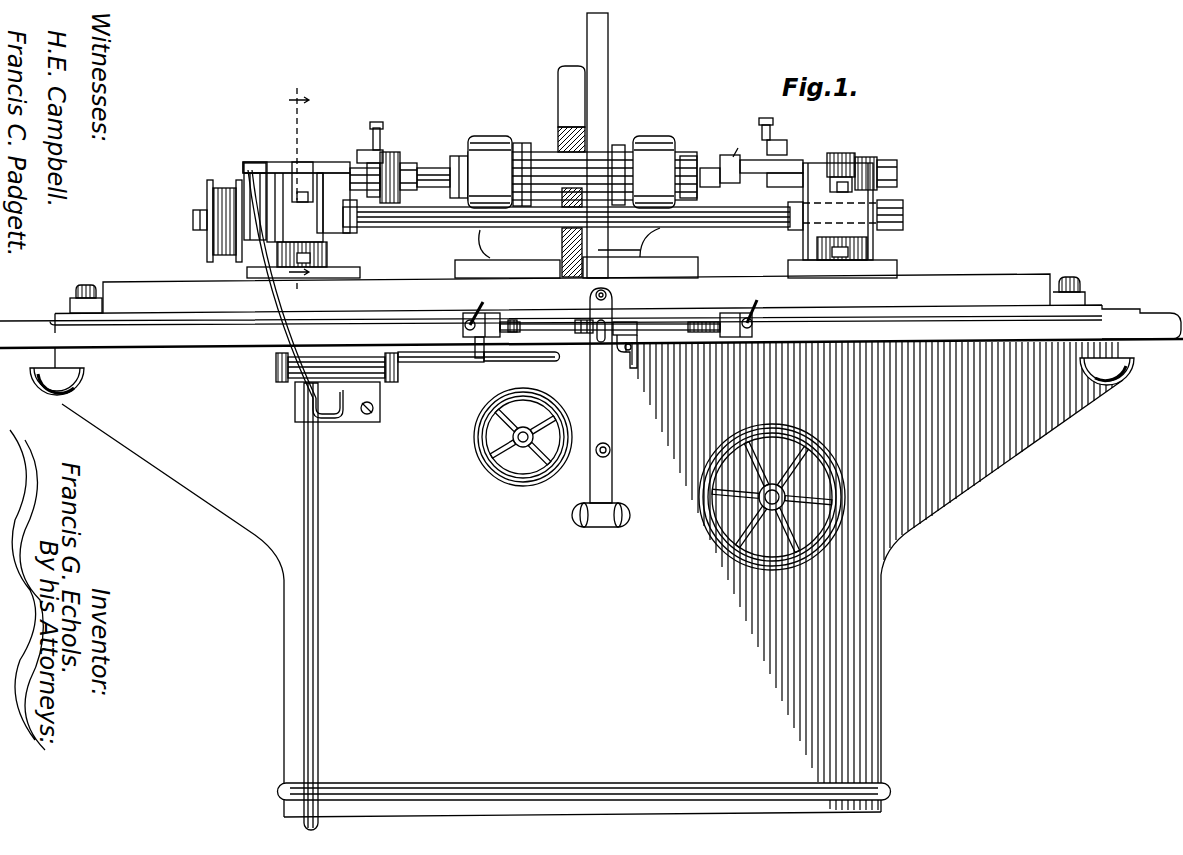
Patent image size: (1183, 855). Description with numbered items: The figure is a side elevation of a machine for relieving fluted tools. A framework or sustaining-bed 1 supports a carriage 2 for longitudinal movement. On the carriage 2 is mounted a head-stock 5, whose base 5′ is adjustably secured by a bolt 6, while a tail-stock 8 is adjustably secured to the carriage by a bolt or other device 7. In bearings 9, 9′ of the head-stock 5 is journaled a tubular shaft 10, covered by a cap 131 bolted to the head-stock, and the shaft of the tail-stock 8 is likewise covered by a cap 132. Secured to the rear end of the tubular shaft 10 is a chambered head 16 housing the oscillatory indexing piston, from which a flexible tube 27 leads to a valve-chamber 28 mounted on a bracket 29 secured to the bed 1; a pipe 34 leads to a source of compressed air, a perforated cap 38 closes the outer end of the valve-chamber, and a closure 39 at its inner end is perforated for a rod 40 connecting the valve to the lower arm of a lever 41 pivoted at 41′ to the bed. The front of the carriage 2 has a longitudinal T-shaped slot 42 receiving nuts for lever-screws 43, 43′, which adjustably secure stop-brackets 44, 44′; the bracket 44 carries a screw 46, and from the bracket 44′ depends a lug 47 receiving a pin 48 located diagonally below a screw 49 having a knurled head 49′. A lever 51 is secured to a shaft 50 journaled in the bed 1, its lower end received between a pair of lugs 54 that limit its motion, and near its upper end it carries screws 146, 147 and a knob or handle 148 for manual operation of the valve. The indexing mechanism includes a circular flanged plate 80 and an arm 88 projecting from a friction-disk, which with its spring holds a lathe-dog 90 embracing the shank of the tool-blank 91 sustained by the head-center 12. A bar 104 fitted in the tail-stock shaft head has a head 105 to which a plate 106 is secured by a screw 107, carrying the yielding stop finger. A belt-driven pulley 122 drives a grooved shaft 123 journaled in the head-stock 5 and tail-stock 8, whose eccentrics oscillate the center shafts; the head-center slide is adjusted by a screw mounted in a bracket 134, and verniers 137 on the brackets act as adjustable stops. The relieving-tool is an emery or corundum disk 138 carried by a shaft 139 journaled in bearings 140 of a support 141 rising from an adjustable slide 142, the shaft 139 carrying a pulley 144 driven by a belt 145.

The framework or sustaining-bed 1 is at (582, 579).
The carriage 2 is at (752, 312).
The head-stock 5 is at (290, 190).
The base 5′ is at (350, 270).
The bolt 6 is at (310, 260).
The bolt 7 is at (853, 251).
The tail-stock 8 is at (870, 157).
The bearing 9 is at (272, 172).
The bearing 9′ is at (325, 175).
The tubular shaft 10 is at (298, 185).
The head-center 12 is at (413, 213).
The chambered head 16 is at (250, 164).
The flexible tube 27 is at (282, 336).
The valve-chamber 28 is at (368, 367).
The bracket 29 is at (354, 422).
The pipe 34 is at (318, 496).
The perforated cap 38 is at (300, 400).
The closure 39 is at (441, 359).
The rod 40 is at (473, 340).
The lever 41 is at (650, 326).
The pivot 41′ is at (637, 368).
The T-shaped slot 42 is at (985, 314).
The lever-screw 43 is at (750, 315).
The lever-screw 43′ is at (466, 318).
The stop-bracket 44 is at (760, 328).
The stop-bracket 44′ is at (468, 335).
The screw 46 is at (715, 318).
The lug 47 is at (512, 322).
The pin 48 is at (532, 361).
The screw 49 is at (512, 320).
The knurled head 49′ is at (478, 445).
The shaft 50 is at (611, 448).
The lever 51 is at (600, 380).
The lugs 54 is at (580, 525).
The circular flanged plate 80 is at (392, 152).
The arm 88 is at (422, 165).
The lathe-dog 90 is at (410, 163).
The tool-blank 91 is at (458, 155).
The bar 104 is at (805, 165).
The head 105 is at (750, 150).
The plate 106 is at (768, 180).
The screw 107 is at (722, 156).
The pulley 122 is at (215, 205).
The shaft 123 is at (738, 215).
The cap 131 is at (303, 162).
The cap 132 is at (842, 153).
The bracket 134 is at (363, 150).
The vernier 137 is at (378, 125).
The disk 138 is at (563, 127).
The shaft 139 is at (522, 157).
The bearings 140 is at (488, 140).
The support 141 is at (582, 205).
The slide 142 is at (507, 257).
The pulley 144 is at (618, 150).
The belt 145 is at (598, 90).
The screw 146 is at (600, 318).
The screw 147 is at (570, 294).
The knob or handle 148 is at (640, 255).